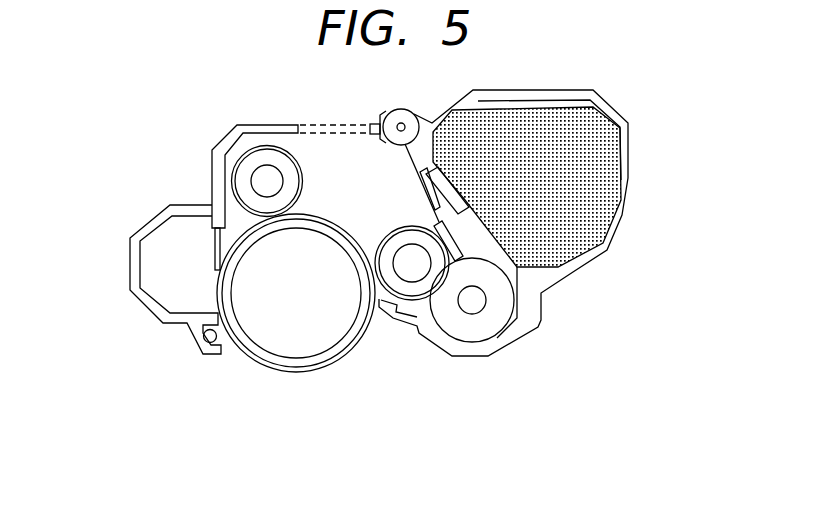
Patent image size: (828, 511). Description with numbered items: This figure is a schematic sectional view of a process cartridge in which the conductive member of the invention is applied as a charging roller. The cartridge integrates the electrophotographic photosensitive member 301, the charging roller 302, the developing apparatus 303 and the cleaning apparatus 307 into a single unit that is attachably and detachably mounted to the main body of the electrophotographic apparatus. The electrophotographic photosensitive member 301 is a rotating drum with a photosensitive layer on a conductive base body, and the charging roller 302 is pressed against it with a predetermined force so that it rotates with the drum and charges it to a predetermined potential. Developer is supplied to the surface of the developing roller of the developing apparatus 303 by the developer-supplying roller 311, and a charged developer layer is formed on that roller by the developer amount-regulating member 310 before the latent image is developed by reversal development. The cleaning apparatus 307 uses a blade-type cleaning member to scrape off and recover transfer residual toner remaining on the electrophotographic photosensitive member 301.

The electrophotographic photosensitive member 301 is at (303, 330).
The charging roller 302 is at (245, 176).
The developing apparatus 303 is at (405, 278).
The cleaning apparatus 307 is at (217, 251).
The developer amount-regulating member 310 is at (455, 233).
The developer-supplying roller 311 is at (472, 312).